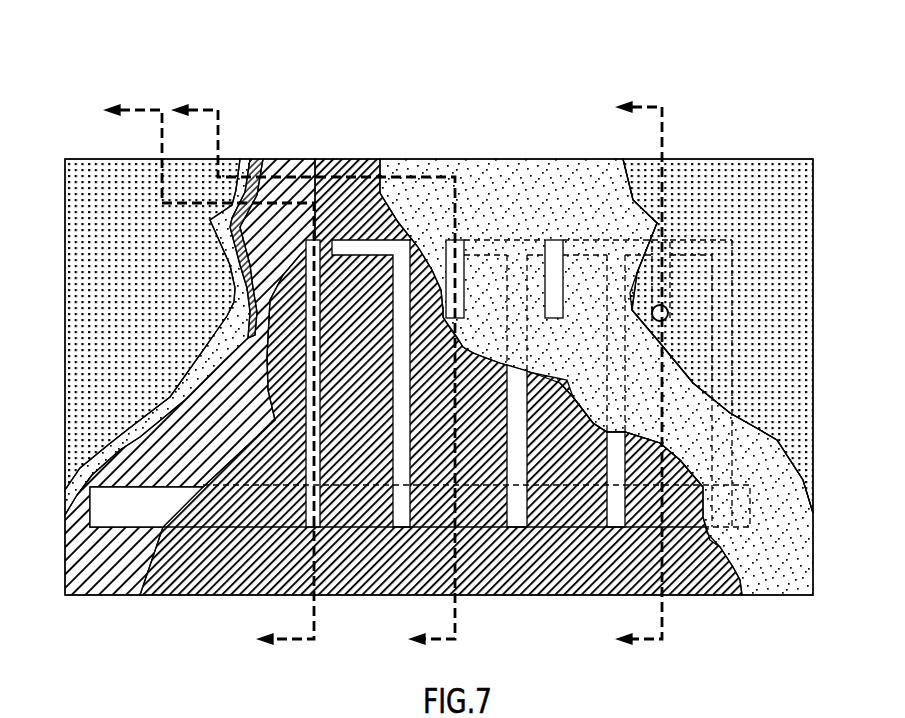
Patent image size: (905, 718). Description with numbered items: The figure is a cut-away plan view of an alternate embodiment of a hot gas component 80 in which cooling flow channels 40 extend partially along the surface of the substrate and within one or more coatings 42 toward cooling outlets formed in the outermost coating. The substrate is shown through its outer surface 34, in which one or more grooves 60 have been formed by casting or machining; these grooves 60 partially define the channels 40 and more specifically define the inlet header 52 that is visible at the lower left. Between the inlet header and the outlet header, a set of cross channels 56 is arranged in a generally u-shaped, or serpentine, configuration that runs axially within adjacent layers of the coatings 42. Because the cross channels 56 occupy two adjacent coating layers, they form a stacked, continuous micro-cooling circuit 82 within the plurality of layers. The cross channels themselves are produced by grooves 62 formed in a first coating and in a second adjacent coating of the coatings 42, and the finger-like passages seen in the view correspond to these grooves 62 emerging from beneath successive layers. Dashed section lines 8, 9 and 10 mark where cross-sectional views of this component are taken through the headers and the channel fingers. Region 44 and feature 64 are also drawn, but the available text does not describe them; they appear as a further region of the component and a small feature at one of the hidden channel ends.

The section line 8- 8 is at (209, 368).
The section line 9- 9 is at (311, 367).
The section line 10- 10 is at (626, 373).
The outer surface 34 is at (90, 388).
The cooling flow channels 40 is at (456, 383).
The coatings 42 is at (247, 577).
The second region 44 is at (705, 180).
The inlet header 52 is at (132, 518).
The cross channels 56 is at (628, 432).
The grooves 60 is at (122, 527).
The grooves 62 is at (522, 450).
The via 64 is at (668, 313).
The hot gas component 80 is at (680, 70).
The micro-cooling circuit 82 is at (732, 220).